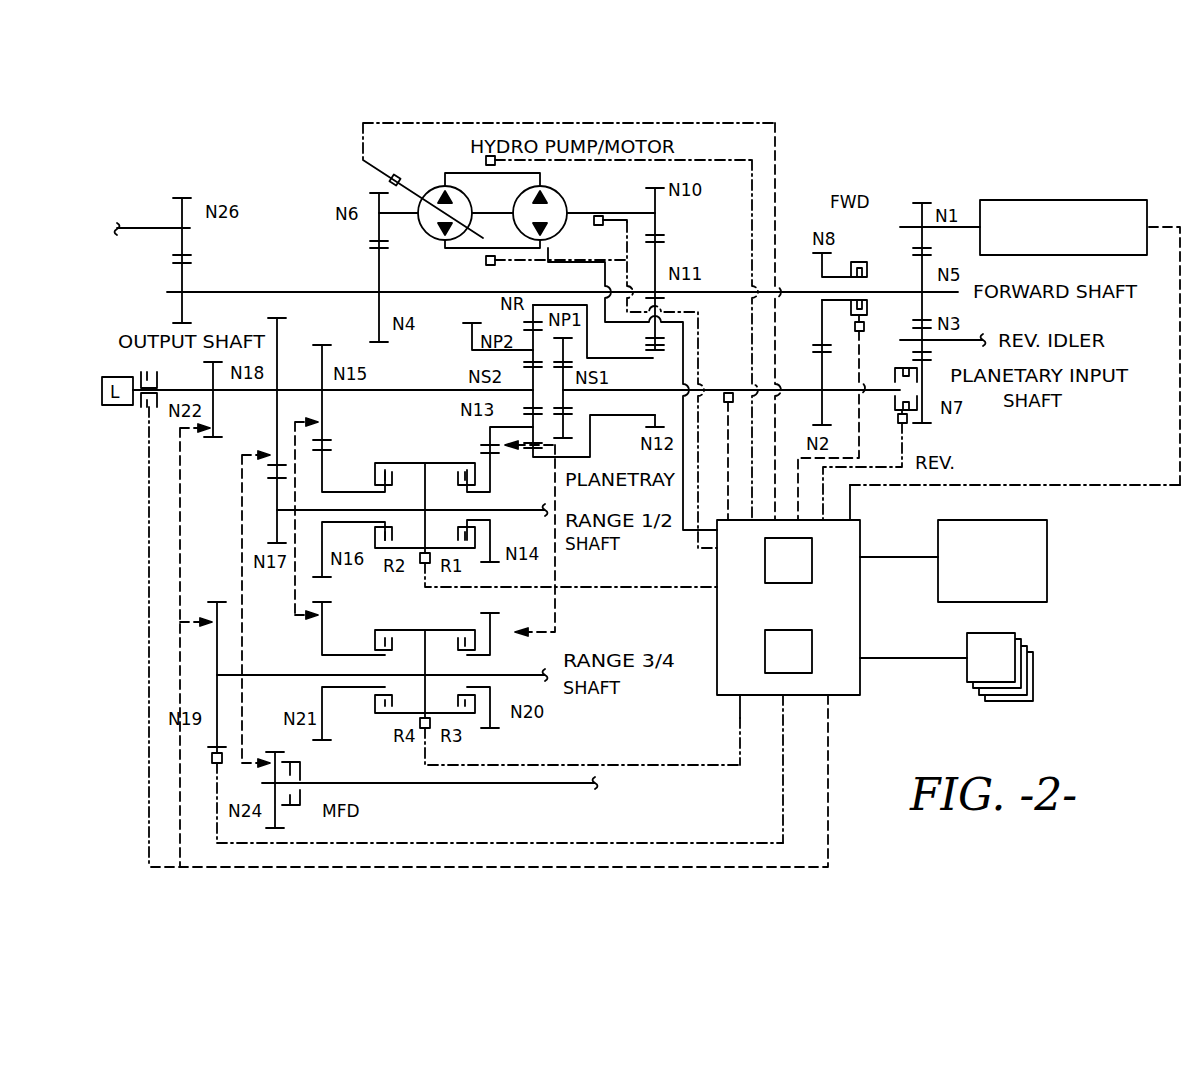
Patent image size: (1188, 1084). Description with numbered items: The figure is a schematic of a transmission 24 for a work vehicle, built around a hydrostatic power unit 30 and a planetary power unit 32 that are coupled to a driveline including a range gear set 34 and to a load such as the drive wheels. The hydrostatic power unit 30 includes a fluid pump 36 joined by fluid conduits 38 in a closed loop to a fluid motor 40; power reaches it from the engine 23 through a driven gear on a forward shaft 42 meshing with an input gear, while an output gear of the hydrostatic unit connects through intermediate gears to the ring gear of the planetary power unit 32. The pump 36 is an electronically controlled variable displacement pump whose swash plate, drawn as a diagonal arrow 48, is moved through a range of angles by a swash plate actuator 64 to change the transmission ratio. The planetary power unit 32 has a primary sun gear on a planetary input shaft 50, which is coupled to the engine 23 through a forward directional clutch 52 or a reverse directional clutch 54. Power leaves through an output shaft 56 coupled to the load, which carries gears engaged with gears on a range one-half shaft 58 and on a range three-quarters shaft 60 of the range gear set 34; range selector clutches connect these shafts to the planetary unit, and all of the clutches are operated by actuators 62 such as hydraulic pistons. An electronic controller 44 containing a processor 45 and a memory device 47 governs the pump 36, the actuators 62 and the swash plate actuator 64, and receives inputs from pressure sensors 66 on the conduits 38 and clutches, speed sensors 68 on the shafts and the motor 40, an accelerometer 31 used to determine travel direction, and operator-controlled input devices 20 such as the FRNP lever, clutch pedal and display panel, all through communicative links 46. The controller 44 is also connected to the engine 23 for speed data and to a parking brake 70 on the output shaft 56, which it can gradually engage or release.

The FRNP lever 20 is at (1059, 558).
The engine 23 is at (1147, 208).
The transmission 24 is at (948, 189).
The hydrostatic power unit 30 is at (364, 174).
The accelerometer 31 is at (1003, 670).
The planetary power unit 32 is at (458, 401).
The range gear set 34 is at (572, 597).
The fluid pump 36 is at (430, 240).
The fluid conduits 38 is at (545, 173).
The fluid motor 40 is at (567, 210).
The forward shaft 42 is at (237, 292).
The electronic controller 44 is at (860, 622).
The processor 45 is at (800, 572).
The communicative link 46 is at (875, 557).
The memory device 47 is at (800, 664).
The swash plate 48 is at (420, 238).
The planetary input shaft 50 is at (625, 390).
The forward directional clutch 52 is at (850, 262).
The reverse directional clutch 54 is at (920, 400).
The output shaft 56 is at (262, 390).
The range 1/2 shaft 58 is at (512, 510).
The range 3/4 shaft 60 is at (255, 675).
The actuators 62 is at (423, 565).
The swash plate actuator 64 is at (385, 180).
The pressure sensors 66 is at (486, 160).
The speed sensors 68 is at (598, 225).
The parking brake 70 is at (158, 376).